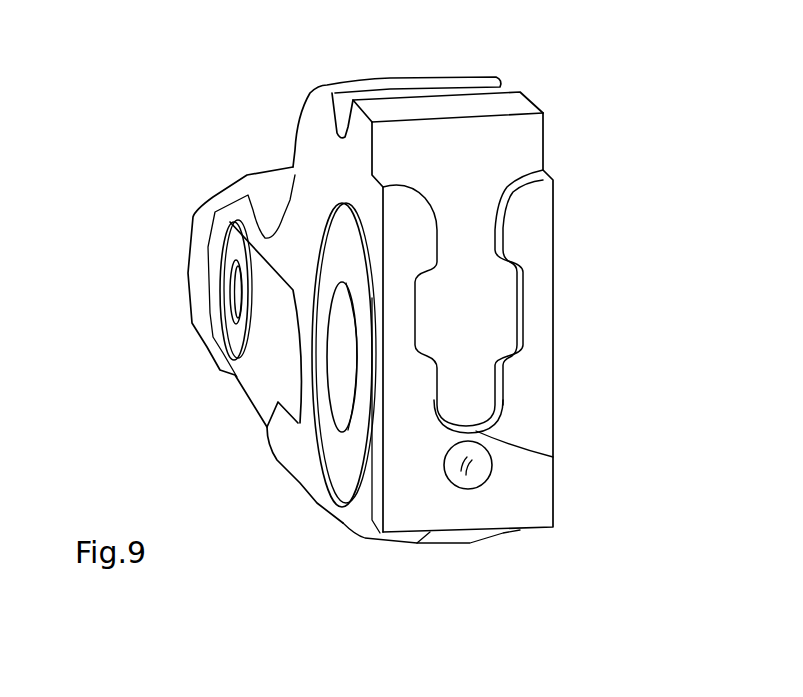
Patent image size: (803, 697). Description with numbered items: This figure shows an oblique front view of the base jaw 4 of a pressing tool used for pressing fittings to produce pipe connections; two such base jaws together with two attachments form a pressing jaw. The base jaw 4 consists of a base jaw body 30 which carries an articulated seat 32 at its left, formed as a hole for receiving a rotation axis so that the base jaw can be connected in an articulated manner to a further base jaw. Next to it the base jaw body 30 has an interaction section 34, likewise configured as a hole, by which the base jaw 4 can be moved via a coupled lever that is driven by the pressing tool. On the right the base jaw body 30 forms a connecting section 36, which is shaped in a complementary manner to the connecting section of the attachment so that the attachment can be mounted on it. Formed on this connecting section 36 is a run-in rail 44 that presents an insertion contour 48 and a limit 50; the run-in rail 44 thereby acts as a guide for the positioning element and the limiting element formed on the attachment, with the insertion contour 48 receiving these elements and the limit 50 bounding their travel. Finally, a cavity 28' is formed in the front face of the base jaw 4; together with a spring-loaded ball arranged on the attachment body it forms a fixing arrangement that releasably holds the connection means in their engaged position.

The base jaw 4 is at (195, 100).
The cavity 28' is at (536, 477).
The base jaw body 30 is at (317, 162).
The articulated seat 32 is at (343, 380).
The interaction section 34 is at (237, 297).
The connecting section 36 is at (582, 179).
The run-in rail 44 is at (528, 410).
The insertion contour 48 is at (418, 200).
The limit 50 is at (553, 455).